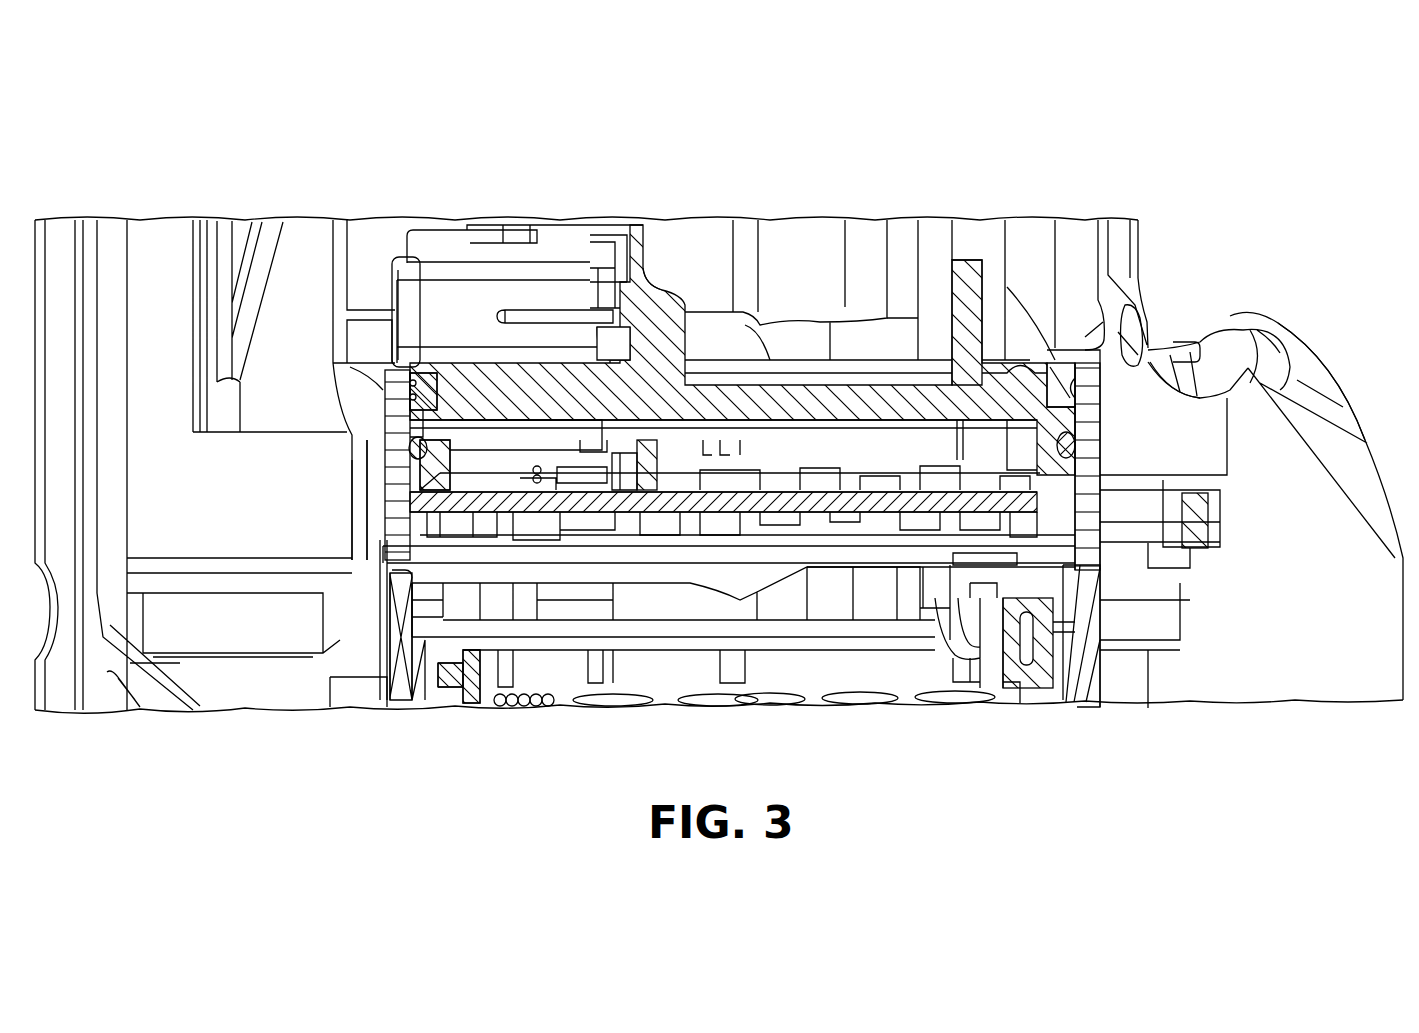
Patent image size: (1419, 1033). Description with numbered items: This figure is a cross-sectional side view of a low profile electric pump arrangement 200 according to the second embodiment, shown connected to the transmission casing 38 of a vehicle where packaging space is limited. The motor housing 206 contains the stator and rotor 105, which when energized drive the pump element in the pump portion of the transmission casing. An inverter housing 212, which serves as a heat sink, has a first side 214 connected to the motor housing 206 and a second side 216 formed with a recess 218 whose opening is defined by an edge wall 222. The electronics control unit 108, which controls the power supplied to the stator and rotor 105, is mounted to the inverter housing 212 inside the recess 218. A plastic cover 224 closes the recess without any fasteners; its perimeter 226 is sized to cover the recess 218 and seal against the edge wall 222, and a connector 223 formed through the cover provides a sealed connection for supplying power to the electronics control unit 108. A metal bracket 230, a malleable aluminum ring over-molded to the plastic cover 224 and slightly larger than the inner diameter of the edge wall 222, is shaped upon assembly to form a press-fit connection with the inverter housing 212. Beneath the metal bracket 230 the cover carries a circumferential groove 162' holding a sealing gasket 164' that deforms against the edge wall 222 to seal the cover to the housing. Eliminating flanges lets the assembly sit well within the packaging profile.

The low profile electric pump arrangement 200 is at (1155, 158).
The perimeter 226 is at (426, 380).
The circumferential groove 162' is at (439, 314).
The connector 223 is at (628, 298).
The second side 216 is at (850, 528).
The recess 218 is at (890, 440).
The plastic cover 224 is at (963, 273).
The metal bracket 230 is at (1063, 376).
The edge wall 222 is at (1098, 398).
The transmission casing 38 is at (1302, 358).
The sealing gasket 164' is at (1173, 482).
The electronics control unit 108 is at (428, 497).
The inverter housing 212 is at (396, 558).
The stator and rotor 105 is at (530, 676).
The first side 214 is at (830, 573).
The motor housing 206 is at (1089, 693).